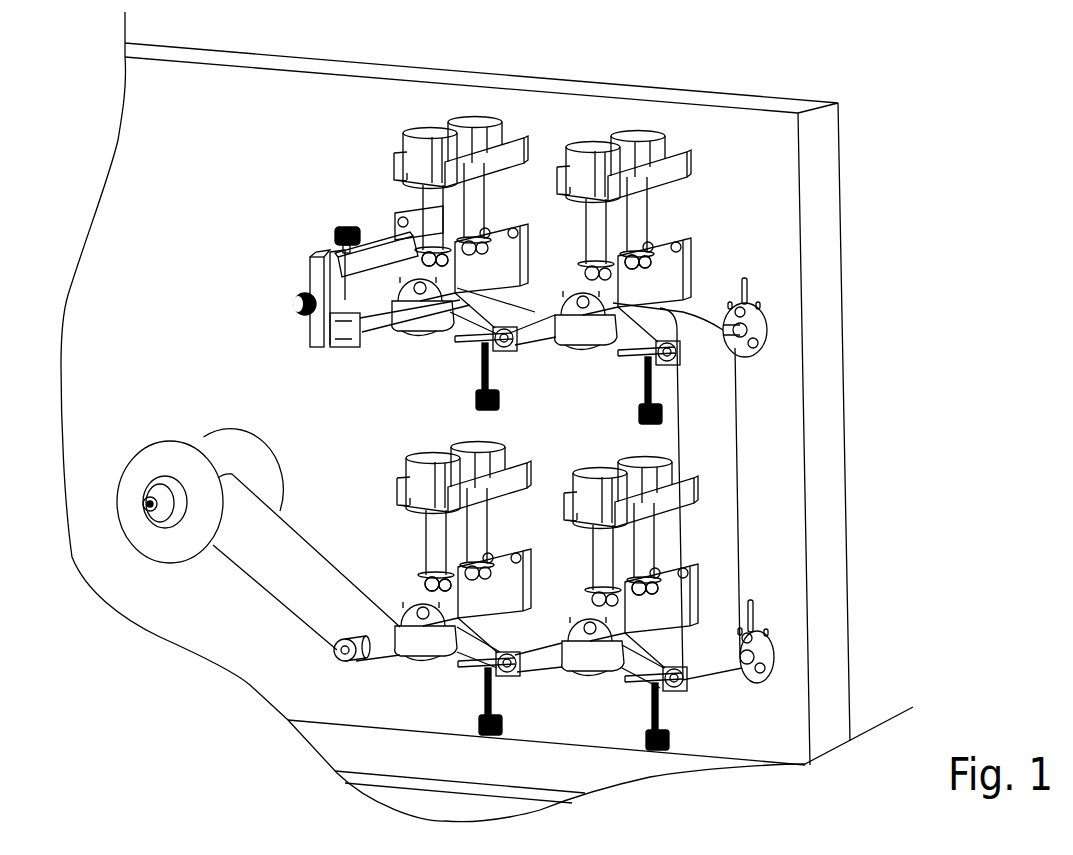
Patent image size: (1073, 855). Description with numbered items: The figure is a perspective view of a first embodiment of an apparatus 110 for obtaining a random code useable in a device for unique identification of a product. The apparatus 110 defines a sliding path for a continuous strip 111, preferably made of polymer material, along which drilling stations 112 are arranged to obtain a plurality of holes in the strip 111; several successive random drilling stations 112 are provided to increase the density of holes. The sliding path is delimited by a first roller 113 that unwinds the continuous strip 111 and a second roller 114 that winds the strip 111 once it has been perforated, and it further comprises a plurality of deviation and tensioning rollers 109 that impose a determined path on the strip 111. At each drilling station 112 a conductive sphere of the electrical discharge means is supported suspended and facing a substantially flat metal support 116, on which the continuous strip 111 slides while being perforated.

The deviation and tensioning rollers 109 is at (765, 330).
The apparatus 110 is at (920, 282).
The continuous strip 111 is at (717, 513).
The drilling station 112 is at (352, 157).
The first roller 113 is at (152, 455).
The second roller 114 is at (378, 330).
The metal support 116 is at (612, 292).